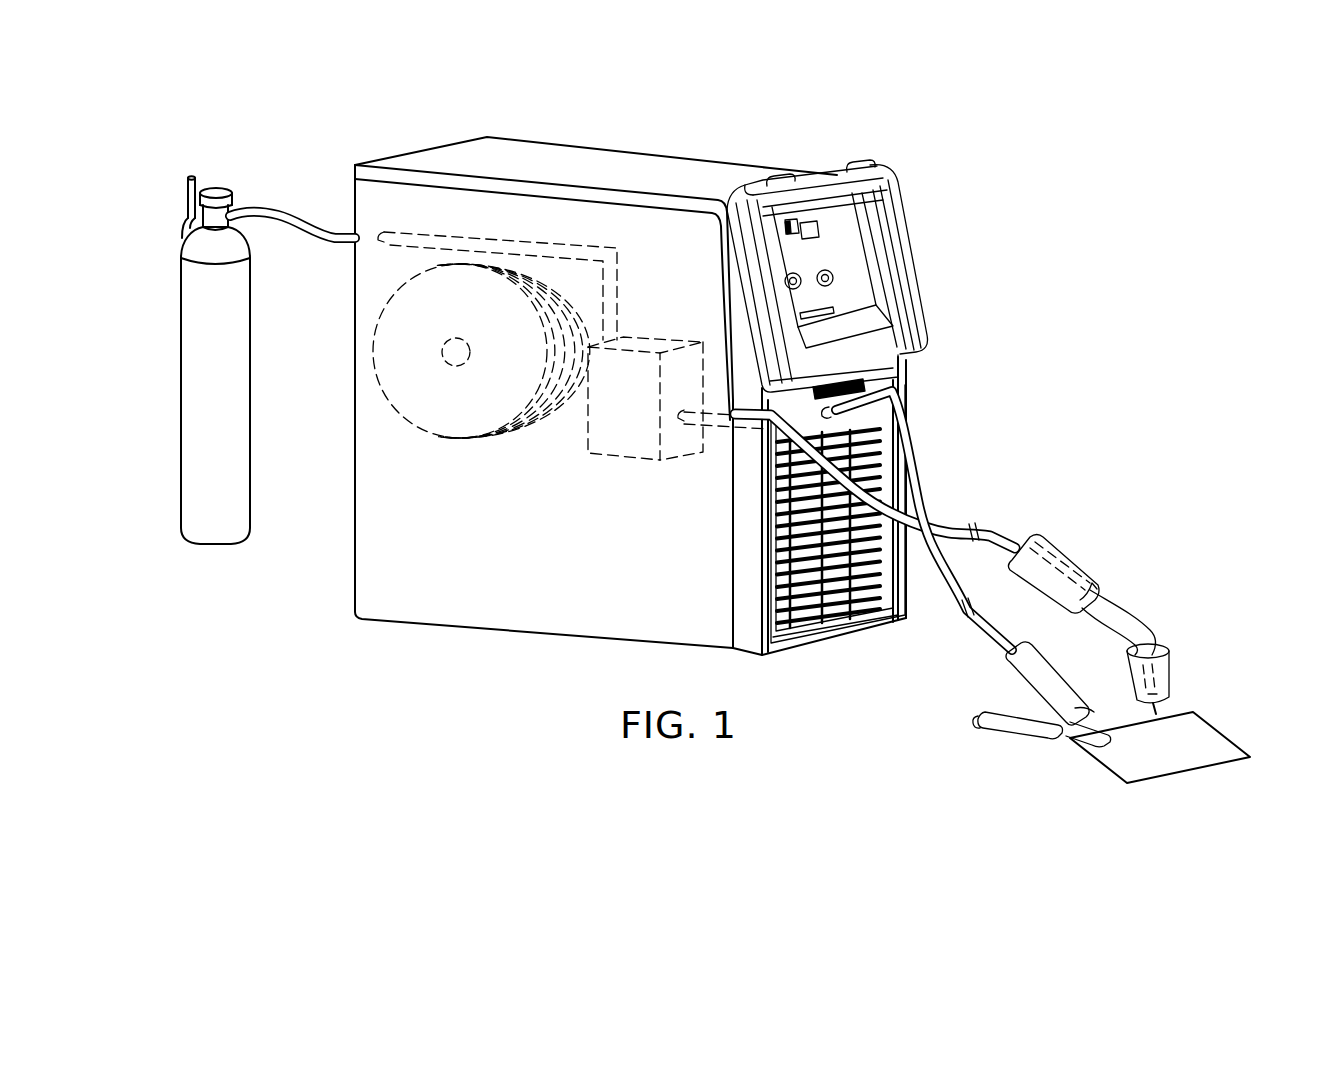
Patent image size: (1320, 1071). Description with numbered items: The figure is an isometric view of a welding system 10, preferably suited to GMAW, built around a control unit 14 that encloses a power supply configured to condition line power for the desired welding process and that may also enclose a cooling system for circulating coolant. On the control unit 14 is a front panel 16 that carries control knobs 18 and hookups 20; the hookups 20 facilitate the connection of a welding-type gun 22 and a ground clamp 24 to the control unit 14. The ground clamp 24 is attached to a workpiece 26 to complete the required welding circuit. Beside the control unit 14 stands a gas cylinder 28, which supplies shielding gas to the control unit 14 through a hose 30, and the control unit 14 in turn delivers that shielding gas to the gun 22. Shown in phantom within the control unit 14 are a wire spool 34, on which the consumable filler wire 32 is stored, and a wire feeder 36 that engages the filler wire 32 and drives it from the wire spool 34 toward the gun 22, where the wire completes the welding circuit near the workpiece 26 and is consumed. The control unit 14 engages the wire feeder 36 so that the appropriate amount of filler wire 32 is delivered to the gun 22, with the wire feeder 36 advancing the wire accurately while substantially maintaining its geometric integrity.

The welding system 10 is at (937, 74).
The control unit 14 is at (754, 161).
The front panel 16 is at (909, 376).
The control knobs 18 is at (826, 266).
The hookups 20 is at (885, 402).
The welding-type gun 22 is at (1092, 557).
The ground clamp 24 is at (1014, 742).
The workpiece 26 is at (1226, 735).
The gas cylinder 28 is at (180, 372).
The hose 30 is at (257, 204).
The filler wire 32 is at (1165, 708).
The wire spool 34 is at (437, 440).
The wire feeder 36 is at (607, 458).